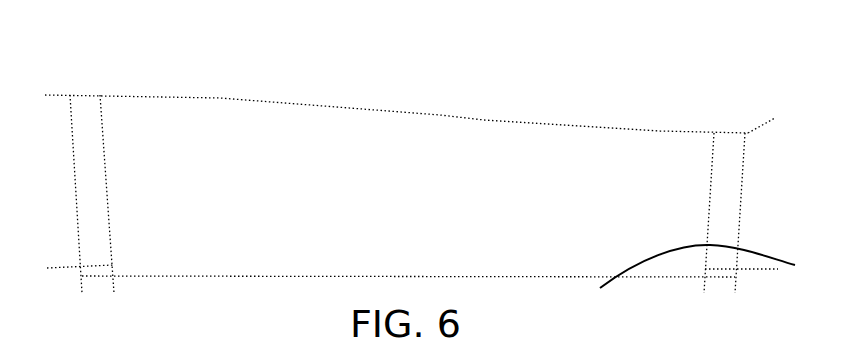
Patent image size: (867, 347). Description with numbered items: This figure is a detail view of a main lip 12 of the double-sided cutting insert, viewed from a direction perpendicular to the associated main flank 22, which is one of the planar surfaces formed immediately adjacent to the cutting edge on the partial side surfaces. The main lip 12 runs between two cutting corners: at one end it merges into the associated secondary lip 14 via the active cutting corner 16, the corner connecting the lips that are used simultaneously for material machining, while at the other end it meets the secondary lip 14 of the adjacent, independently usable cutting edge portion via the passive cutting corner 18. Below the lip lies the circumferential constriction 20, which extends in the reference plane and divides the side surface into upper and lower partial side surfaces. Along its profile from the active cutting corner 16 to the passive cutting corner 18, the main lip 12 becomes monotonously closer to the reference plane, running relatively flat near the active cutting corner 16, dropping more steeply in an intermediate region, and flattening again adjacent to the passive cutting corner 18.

The main lip 12 is at (484, 120).
The secondary lip 14 is at (53, 96).
The active cutting corner 16 is at (85, 95).
The passive cutting corner 18 is at (726, 133).
The constriction 20 is at (712, 266).
The main flank 22 is at (262, 128).